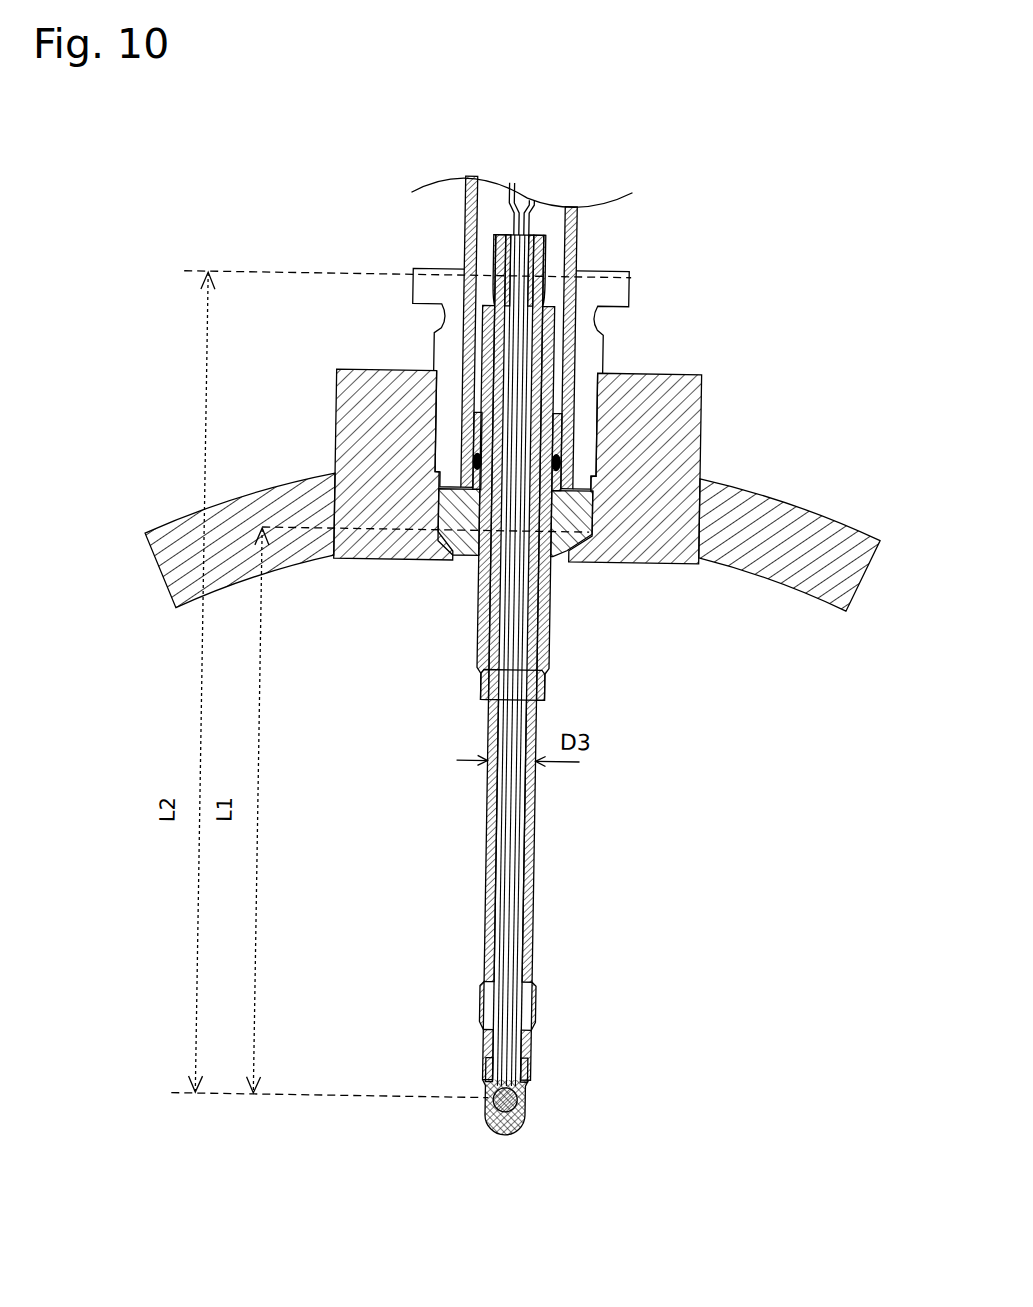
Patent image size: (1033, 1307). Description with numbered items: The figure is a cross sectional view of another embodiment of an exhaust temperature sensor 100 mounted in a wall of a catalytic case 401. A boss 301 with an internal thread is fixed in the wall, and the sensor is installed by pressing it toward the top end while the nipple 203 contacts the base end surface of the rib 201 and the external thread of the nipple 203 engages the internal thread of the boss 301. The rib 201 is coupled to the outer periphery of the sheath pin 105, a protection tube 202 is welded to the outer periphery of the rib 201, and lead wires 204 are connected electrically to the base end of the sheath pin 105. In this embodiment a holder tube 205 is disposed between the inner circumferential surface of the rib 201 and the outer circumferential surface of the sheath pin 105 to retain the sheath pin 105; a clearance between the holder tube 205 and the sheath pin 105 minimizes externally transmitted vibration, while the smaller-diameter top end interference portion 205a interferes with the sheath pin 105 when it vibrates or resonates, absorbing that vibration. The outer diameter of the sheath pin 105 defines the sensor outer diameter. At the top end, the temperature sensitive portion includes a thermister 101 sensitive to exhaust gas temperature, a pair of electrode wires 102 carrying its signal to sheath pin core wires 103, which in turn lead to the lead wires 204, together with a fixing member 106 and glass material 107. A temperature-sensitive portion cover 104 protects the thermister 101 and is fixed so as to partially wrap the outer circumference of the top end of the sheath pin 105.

The exhaust temperature sensor 100 is at (362, 173).
The thermister 101 is at (524, 1093).
The electrode wire 102 is at (508, 1070).
The sheath pin core wire 103 is at (513, 960).
The temperature-sensitive portion cover 104 is at (545, 1018).
The sheath pin 105 is at (542, 820).
The fixing member 106 is at (535, 890).
The glass material 107 is at (528, 1110).
The rib 201 is at (555, 542).
The protection tube 202 is at (570, 351).
The nipple 203 is at (455, 348).
The lead wire 204 is at (527, 228).
The holder tube 205 is at (482, 608).
The top end interference portion 205a is at (550, 680).
The boss 301 is at (703, 427).
The catalytic case 401 is at (833, 512).